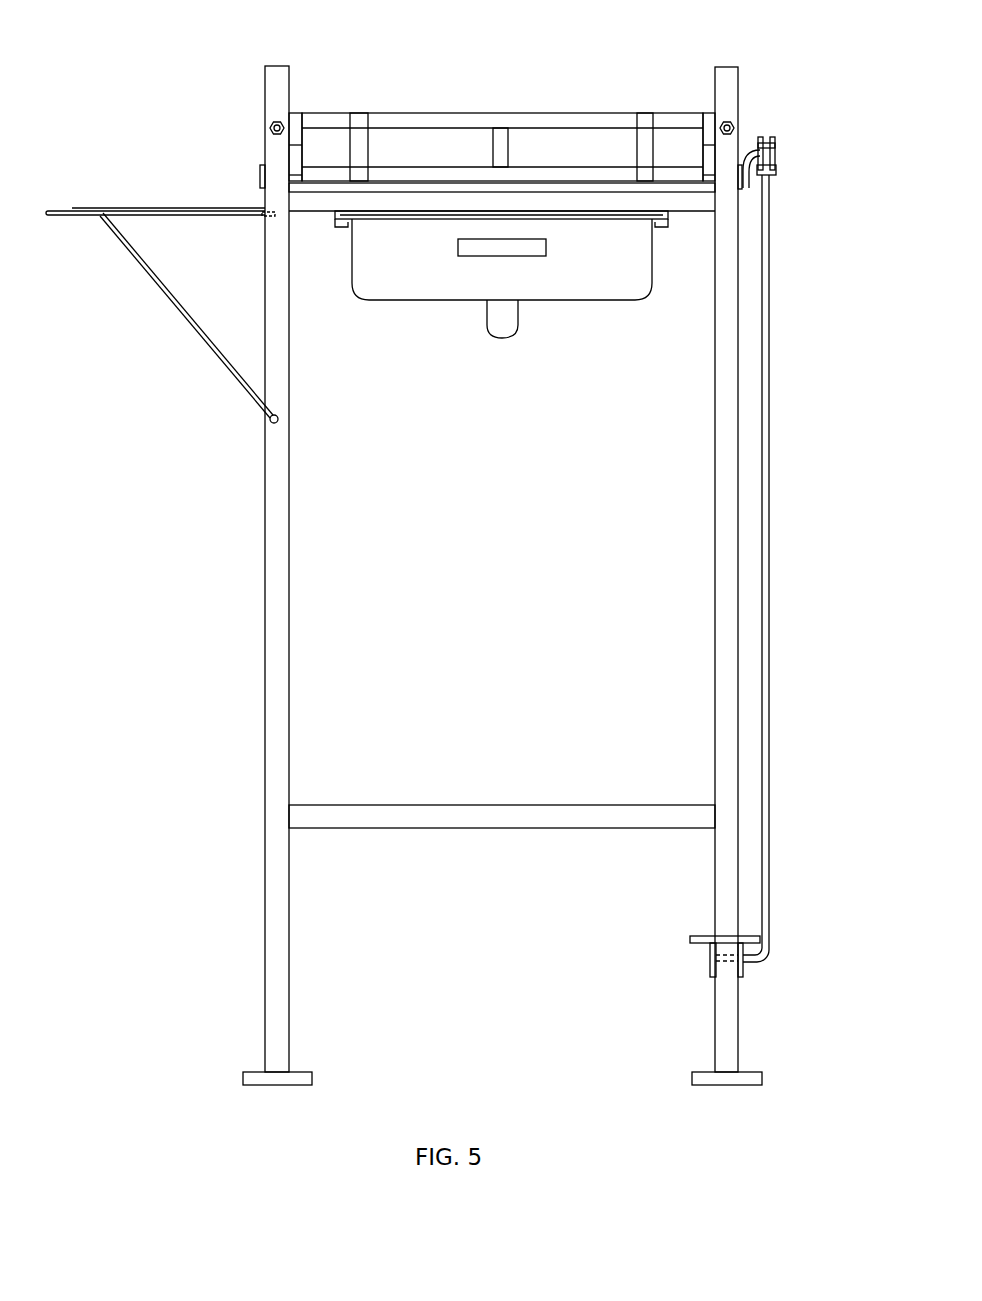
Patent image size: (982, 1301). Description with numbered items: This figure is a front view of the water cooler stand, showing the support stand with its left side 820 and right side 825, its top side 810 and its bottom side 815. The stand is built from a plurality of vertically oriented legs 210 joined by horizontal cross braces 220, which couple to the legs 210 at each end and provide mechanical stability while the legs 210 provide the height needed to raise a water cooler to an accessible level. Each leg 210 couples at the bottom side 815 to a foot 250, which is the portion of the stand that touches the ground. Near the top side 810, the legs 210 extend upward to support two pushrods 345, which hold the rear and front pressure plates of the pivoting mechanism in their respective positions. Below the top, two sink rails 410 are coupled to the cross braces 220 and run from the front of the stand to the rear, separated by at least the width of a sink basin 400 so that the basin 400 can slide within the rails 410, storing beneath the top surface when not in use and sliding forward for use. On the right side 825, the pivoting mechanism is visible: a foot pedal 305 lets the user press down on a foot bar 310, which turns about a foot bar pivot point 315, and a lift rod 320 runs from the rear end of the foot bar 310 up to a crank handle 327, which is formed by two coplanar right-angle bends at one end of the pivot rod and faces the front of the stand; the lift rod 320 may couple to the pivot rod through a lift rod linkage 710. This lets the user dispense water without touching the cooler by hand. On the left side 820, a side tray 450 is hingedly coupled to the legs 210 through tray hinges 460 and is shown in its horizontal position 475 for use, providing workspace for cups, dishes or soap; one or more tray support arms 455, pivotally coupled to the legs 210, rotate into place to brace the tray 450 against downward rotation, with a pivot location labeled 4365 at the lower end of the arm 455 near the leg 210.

The legs 210 is at (715, 685).
The cross braces 220 is at (328, 806).
The foot 250 is at (692, 1075).
The foot pedal 305 is at (697, 938).
The foot bar 310 is at (743, 965).
The foot bar pivot point 315 is at (722, 962).
The lift rod 320 is at (770, 372).
The crank handle 327 is at (777, 145).
The pushrods 345 is at (270, 128).
The sink basin 400 is at (613, 302).
The sink rails 410 is at (340, 223).
The side tray 450 is at (145, 208).
The tray support arms 455 is at (183, 300).
The tray hinges 460 is at (265, 208).
The horizontal position 475 is at (84, 262).
The lift rod linkage 710 is at (778, 160).
The top side 810 is at (502, 74).
The bottom side 815 is at (593, 1108).
The left side 820 is at (160, 583).
The right side 825 is at (790, 583).
The pivot pin 4365 is at (272, 421).